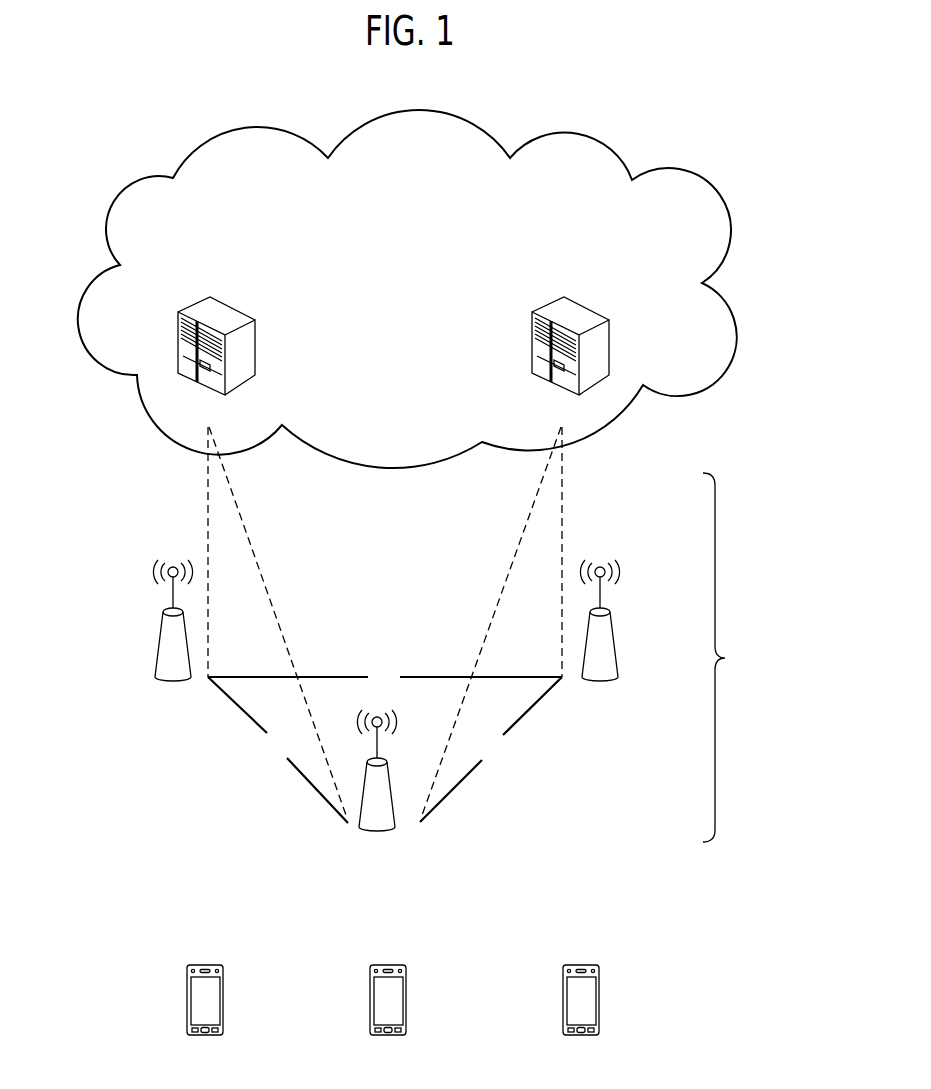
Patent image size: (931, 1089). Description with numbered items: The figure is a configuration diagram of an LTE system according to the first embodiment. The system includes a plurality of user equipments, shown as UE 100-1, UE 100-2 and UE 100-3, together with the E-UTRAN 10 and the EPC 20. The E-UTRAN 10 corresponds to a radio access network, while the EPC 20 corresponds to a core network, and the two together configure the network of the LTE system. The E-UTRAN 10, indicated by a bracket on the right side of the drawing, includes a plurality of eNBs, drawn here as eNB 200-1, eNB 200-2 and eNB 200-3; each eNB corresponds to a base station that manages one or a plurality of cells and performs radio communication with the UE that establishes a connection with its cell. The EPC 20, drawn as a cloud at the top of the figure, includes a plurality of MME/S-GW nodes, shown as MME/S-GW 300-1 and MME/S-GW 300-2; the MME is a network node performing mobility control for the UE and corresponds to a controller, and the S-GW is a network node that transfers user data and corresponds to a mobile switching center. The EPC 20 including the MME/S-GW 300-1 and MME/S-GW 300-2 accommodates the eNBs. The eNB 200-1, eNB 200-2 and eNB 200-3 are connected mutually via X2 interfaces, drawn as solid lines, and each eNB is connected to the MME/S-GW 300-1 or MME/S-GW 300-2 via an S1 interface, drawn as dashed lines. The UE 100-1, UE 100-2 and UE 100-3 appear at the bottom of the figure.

The EPC 20 is at (610, 148).
The MME/S-GW 300-1 is at (262, 282).
The MME/S-GW 300-2 is at (598, 288).
The E-UTRAN 10 is at (725, 658).
The eNB 200-1 is at (158, 647).
The eNB 200-2 is at (397, 803).
The eNB 200-3 is at (613, 625).
The UE 100-1 is at (220, 963).
The UE 100-2 is at (392, 963).
The UE 100-3 is at (583, 963).